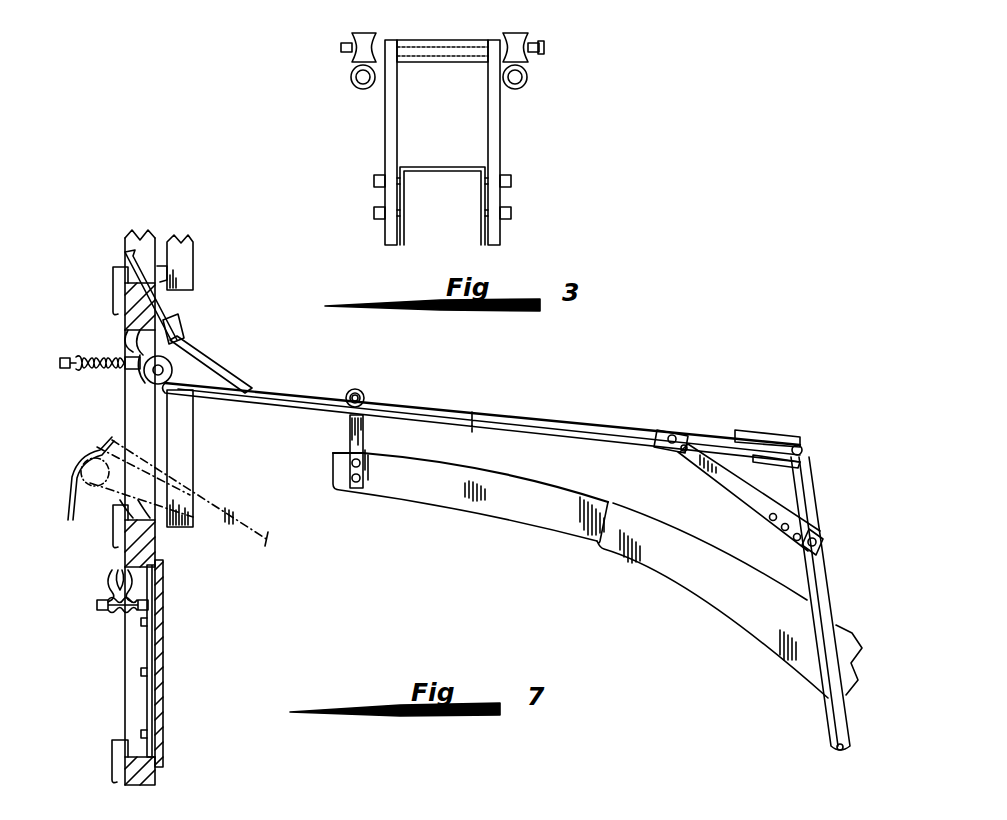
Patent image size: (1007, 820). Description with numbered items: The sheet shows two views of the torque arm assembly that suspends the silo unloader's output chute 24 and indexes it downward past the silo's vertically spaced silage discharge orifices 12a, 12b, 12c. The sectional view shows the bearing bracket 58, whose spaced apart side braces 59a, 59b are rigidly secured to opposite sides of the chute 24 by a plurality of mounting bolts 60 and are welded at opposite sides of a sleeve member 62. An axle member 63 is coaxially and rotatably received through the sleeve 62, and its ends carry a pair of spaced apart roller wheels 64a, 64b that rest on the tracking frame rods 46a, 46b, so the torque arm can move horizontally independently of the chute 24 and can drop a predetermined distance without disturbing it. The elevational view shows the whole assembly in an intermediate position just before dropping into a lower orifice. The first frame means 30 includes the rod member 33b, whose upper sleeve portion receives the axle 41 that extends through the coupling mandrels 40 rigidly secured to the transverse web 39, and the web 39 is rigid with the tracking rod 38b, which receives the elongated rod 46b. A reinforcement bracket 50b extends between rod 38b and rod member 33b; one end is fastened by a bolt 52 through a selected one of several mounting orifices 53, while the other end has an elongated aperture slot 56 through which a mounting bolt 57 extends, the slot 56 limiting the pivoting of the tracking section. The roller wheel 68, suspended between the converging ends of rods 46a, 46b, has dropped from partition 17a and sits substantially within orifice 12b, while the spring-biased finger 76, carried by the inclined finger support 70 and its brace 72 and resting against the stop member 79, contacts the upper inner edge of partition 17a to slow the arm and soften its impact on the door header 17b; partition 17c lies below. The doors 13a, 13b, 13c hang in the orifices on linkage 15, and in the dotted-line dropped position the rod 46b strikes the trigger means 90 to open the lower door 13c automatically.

In FIG. 3, the bearing bracket 58 is at (387, 122).
In FIG. 7, the bearing bracket 58 is at (340, 451).
In FIG. 3, the side brace 59a is at (386, 110).
In FIG. 3, the side brace 59b is at (500, 128).
In FIG. 7, the side brace 59b is at (363, 437).
In FIG. 3, the sleeve member 62 is at (447, 30).
In FIG. 3, the roller wheel 64a is at (362, 33).
In FIG. 3, the roller wheel 64b is at (546, 25).
In FIG. 7, the roller wheel 64b is at (357, 389).
In FIG. 3, the axle member 63 is at (545, 47).
In FIG. 7, the axle member 63 is at (366, 397).
In FIG. 3, the elongated rod 46a is at (356, 88).
In FIG. 3, the elongated rod 46b is at (523, 87).
In FIG. 3, the output chute 24 is at (436, 167).
In FIG. 7, the output chute 24 is at (437, 510).
In FIG. 3, the mounting bolts 60 is at (372, 212).
In FIG. 7, the mounting bolts 60 is at (352, 478).
In FIG. 7, the silage discharge orifice 12a is at (118, 246).
In FIG. 7, the silage discharge orifice 12b is at (120, 418).
In FIG. 7, the silage discharge orifice 12c is at (128, 705).
In FIG. 7, the door 13a is at (190, 252).
In FIG. 7, the door 13b is at (193, 482).
In FIG. 7, the door 13c is at (165, 594).
In FIG. 7, the partition 17a is at (125, 297).
In FIG. 7, the partition 17b is at (158, 552).
In FIG. 7, the partition 17c is at (157, 785).
In FIG. 7, the linkage 15 is at (105, 344).
In FIG. 7, the roller wheel means 68 is at (148, 379).
In FIG. 7, the inclined finger support 70 is at (228, 353).
In FIG. 7, the finger 76 is at (172, 303).
In FIG. 7, the stop member 79 is at (184, 330).
In FIG. 7, the brace 72 is at (240, 385).
In FIG. 7, the rod 38b is at (500, 418).
In FIG. 7, the mounting bolt 57 is at (670, 434).
In FIG. 7, the elongated aperture slot 56 is at (687, 444).
In FIG. 7, the reinforcement bracket 50b is at (700, 470).
In FIG. 7, the mounting orifices 53 is at (768, 520).
In FIG. 7, the bolt 52 is at (822, 546).
In FIG. 7, the transverse web 39 is at (785, 432).
In FIG. 7, the axle 41 is at (801, 448).
In FIG. 7, the coupling mandrels 40 is at (812, 453).
In FIG. 7, the rod member 33b is at (826, 580).
In FIG. 7, the first frame means 30 is at (838, 510).
In FIG. 7, the trigger means 90 is at (130, 500).